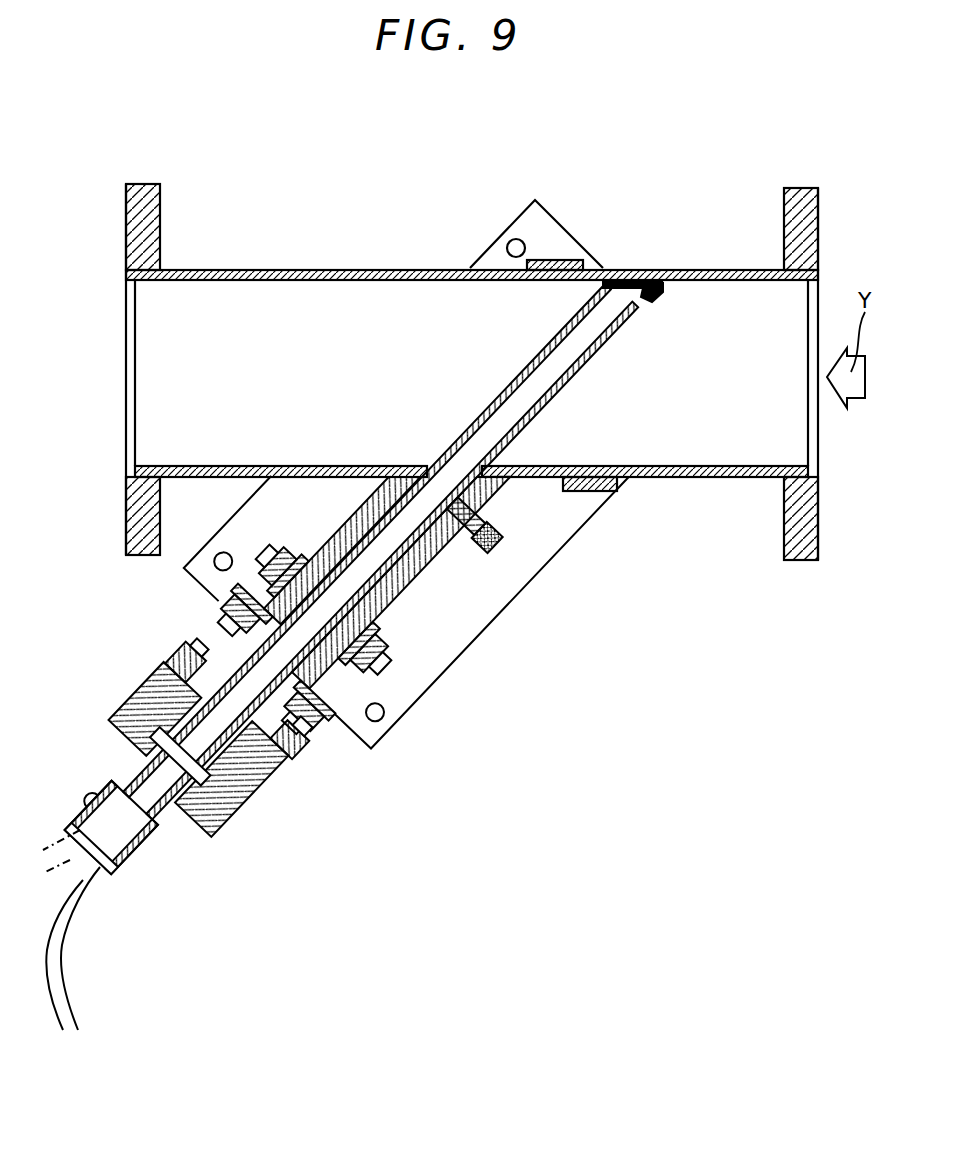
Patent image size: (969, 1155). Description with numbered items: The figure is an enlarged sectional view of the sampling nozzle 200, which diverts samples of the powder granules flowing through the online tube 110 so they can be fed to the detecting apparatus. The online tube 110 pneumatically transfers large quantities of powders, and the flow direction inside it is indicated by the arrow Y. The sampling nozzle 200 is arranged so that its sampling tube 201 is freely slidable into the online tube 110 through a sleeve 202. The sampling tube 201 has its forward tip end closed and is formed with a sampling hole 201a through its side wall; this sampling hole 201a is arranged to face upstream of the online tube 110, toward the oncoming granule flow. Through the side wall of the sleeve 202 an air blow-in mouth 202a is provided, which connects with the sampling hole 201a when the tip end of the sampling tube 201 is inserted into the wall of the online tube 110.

The online tube 110 is at (343, 270).
The sampling tube 201 is at (593, 363).
The sampling hole 201a is at (645, 303).
The sleeve 202 is at (420, 587).
The air blow-in mouth 202a is at (483, 520).
The sampling nozzle 200 is at (450, 722).